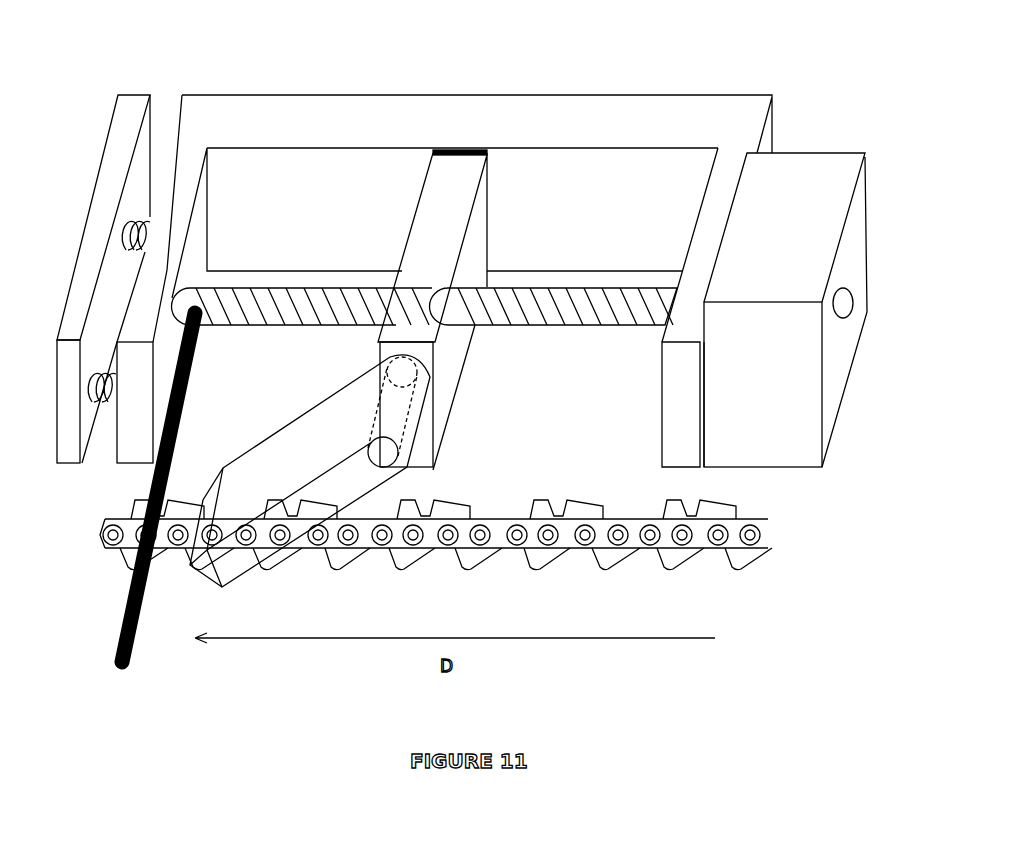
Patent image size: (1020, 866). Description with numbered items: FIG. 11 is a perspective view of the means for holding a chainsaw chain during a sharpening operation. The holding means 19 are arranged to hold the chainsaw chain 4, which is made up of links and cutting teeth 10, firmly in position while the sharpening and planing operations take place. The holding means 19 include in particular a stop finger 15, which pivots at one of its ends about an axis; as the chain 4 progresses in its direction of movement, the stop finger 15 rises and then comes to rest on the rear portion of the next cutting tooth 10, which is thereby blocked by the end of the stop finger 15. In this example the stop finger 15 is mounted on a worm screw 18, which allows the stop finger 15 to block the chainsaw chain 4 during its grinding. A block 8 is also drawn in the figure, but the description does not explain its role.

The chainsaw chain 4 is at (463, 554).
The clamping block 8 is at (795, 440).
The cutting tooth 10 is at (697, 530).
The stop finger 15 is at (270, 478).
The worm screw 18 is at (510, 312).
The holding means 19 is at (482, 128).